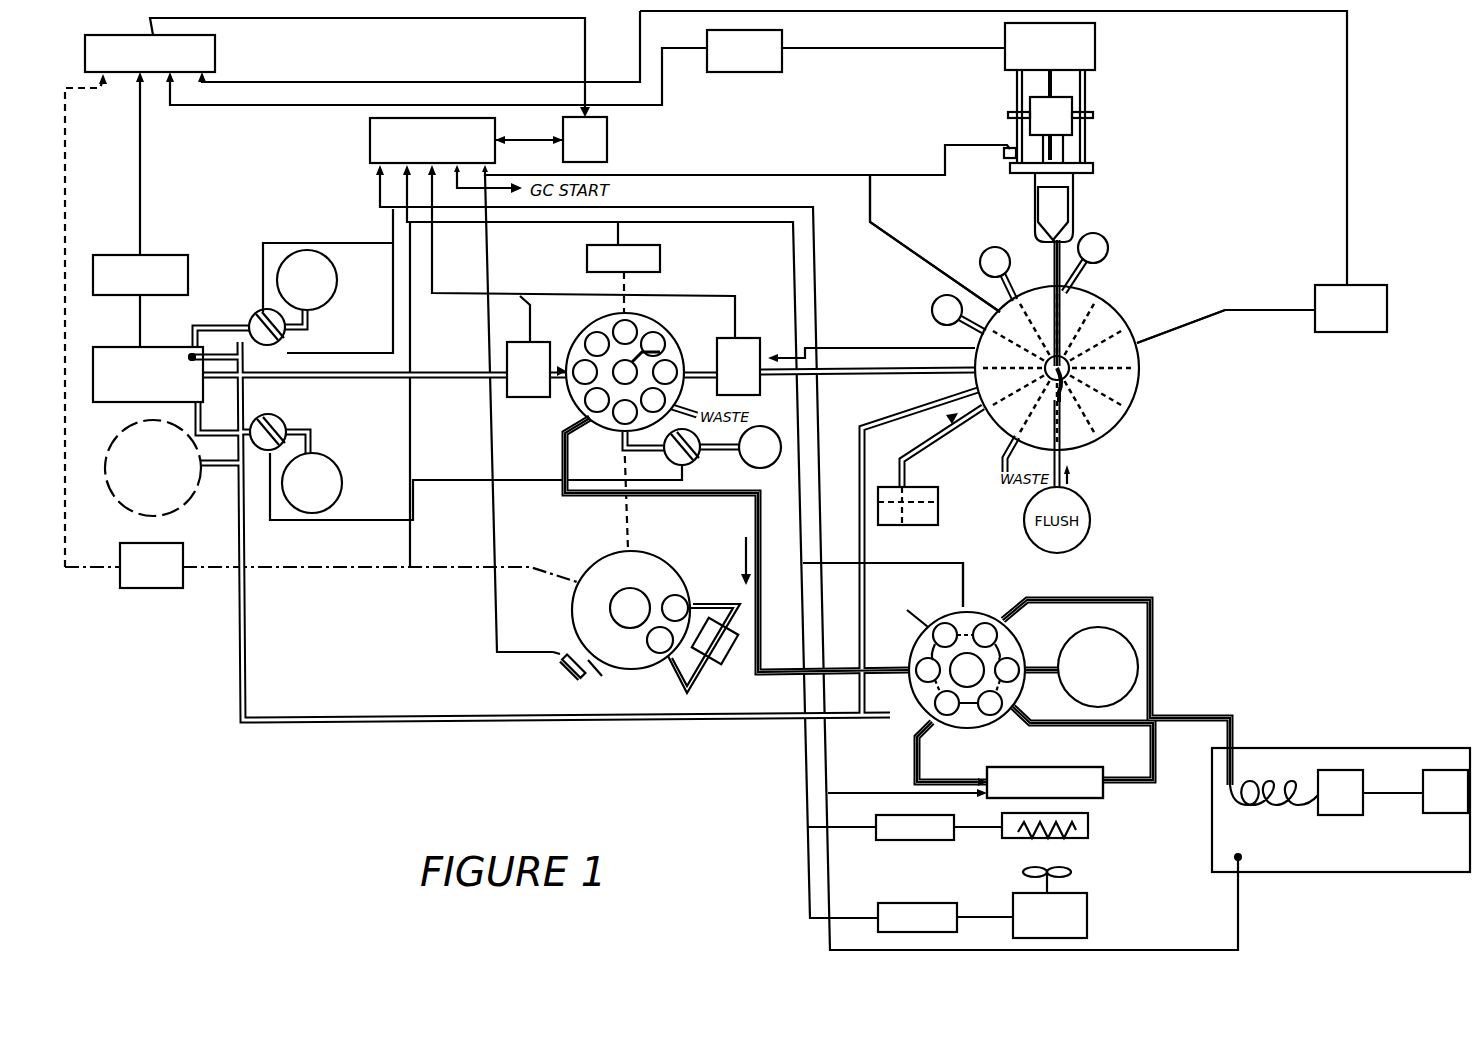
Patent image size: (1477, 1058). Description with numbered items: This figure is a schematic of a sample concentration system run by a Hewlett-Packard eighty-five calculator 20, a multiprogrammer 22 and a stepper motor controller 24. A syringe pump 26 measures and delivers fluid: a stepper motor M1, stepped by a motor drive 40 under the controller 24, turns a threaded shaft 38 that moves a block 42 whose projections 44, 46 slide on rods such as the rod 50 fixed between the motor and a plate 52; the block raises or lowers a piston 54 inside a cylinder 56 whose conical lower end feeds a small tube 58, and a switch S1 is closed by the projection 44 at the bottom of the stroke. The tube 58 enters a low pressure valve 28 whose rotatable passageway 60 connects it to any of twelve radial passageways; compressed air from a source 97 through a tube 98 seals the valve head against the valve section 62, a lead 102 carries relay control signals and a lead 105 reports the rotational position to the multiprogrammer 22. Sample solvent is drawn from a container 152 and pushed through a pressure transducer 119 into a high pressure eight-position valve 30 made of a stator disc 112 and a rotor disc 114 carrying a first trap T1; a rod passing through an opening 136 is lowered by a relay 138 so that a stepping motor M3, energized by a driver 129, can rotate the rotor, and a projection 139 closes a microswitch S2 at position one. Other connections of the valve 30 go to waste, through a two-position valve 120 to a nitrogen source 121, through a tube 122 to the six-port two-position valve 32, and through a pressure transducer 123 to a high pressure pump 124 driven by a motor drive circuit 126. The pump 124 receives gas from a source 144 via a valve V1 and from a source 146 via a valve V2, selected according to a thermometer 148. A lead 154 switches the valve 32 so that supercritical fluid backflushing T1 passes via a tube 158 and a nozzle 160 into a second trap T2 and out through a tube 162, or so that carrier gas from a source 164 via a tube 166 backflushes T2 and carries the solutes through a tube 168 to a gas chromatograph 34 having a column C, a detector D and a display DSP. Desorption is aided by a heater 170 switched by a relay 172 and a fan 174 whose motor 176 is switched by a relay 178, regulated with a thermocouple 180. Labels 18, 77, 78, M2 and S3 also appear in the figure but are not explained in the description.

The rail 18 is at (1017, 90).
The calculator 20 is at (607, 135).
The multiprogrammer 22 is at (370, 145).
The stepper motor controller 24 is at (215, 58).
The syringe pump 26 is at (1088, 132).
The low pressure valve 28 is at (1072, 345).
The high pressure valve 30 is at (643, 351).
The two-position valve 32 is at (970, 640).
The gas chromatograph 34 is at (1341, 799).
The shaft 38 is at (1053, 90).
The motor drive 40 is at (782, 58).
The block 42 is at (1066, 122).
The projection 44 is at (1008, 115).
The projection 46 is at (1094, 115).
The rod 50 is at (1080, 82).
The plate 52 is at (1010, 170).
The piston 54 is at (1038, 212).
The cylinder 56 is at (1076, 220).
The small tube 58 is at (1046, 266).
The passageway 60 is at (1069, 403).
The valve section 62 is at (1130, 408).
The drive connection 77 is at (1236, 310).
The motor drive 78 is at (1325, 285).
The source of low pressure compressed air 97 is at (190, 500).
The tube 98 is at (870, 568).
The lead 102 is at (880, 348).
The lead 105 is at (870, 205).
The stator disc 112 is at (668, 330).
The rotor disc 114 is at (656, 622).
The pressure transducer 119 is at (752, 338).
The two-position valve 120 is at (695, 462).
The source of nitrogen 121 is at (770, 426).
The tube 122 is at (750, 530).
The pressure transducer 123 is at (535, 342).
The high pressure pump 124 is at (112, 347).
The motor drive circuit 126 is at (170, 255).
The driver 129 is at (175, 588).
The opening 136 is at (660, 352).
The relay 138 is at (655, 252).
The projection 139 is at (555, 655).
The gas source 144 is at (336, 248).
The gas source 146 is at (335, 460).
The thermometer 148 is at (185, 352).
The sample container 152 is at (930, 487).
The lead 154 is at (963, 598).
The tube 158 is at (917, 750).
The nozzle 160 is at (987, 780).
The tube 162 is at (1133, 788).
The carrier gas source 164 is at (1098, 627).
The tube 166 is at (1043, 665).
The tube 168 is at (1180, 717).
The electrical heater 170 is at (1086, 838).
The relay 172 is at (890, 840).
The fan 174 is at (1071, 872).
The motor 176 is at (1087, 912).
The relay 178 is at (890, 932).
The thermocouple 180 is at (990, 798).
The stepper motor M1 is at (1095, 48).
The valve motor M2 is at (967, 670).
The stepping motor M3 is at (630, 608).
The switch S1 is at (1093, 248).
The microswitch S2 is at (995, 262).
The switch S3 is at (947, 310).
The two-position valve V1 is at (275, 328).
The two-position valve V2 is at (284, 424).
The first trapping means T1 is at (665, 585).
The second trapping means T2 is at (1045, 782).
The column C is at (1275, 810).
The detector D is at (1338, 815).
The display means DSP is at (1428, 813).